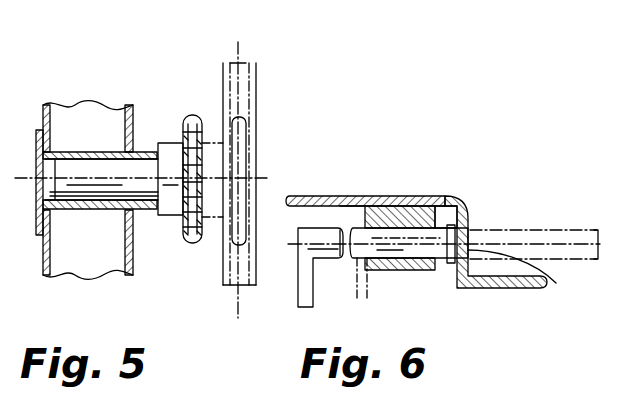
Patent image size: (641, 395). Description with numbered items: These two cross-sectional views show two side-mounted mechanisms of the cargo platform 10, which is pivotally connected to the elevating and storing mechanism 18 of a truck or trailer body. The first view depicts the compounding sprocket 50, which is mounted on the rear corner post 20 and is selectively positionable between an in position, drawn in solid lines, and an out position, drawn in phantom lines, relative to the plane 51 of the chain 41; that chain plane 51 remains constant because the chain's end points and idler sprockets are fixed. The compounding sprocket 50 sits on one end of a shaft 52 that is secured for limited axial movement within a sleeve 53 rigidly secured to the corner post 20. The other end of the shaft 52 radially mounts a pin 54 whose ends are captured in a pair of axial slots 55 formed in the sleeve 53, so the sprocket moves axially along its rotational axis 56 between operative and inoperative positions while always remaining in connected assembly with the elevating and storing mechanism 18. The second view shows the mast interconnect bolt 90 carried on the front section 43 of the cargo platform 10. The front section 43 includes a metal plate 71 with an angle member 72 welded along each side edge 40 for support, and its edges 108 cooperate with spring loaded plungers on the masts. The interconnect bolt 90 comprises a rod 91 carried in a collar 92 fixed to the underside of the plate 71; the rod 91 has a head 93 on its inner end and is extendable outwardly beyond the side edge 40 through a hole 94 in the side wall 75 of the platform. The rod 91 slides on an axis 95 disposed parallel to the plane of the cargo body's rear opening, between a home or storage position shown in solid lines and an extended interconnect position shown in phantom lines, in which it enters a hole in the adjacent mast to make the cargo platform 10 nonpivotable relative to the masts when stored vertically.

In FIG. 6, the cargo platform 10 is at (423, 100).
In FIG. 5, the elevating and storing mechanism 18 is at (0, 61).
In FIG. 5, the rear corner post 20 is at (45, 275).
In FIG. 6, the side edge 40 is at (468, 213).
In FIG. 5, the chain 41 is at (256, 78).
In FIG. 6, the front section 43 is at (328, 198).
In FIG. 5, the compounding sprocket 50 is at (233, 117).
In FIG. 5, the plane of chain 51 is at (241, 58).
In FIG. 5, the shaft 52 is at (127, 170).
In FIG. 5, the sleeve 53 is at (148, 212).
In FIG. 5, the pin 54 is at (53, 173).
In FIG. 5, the axial slots 55 is at (77, 200).
In FIG. 5, the rotational axis 56 is at (263, 175).
In FIG. 6, the metal plate 71 is at (358, 195).
In FIG. 6, the angle member 72 is at (455, 290).
In FIG. 6, the side wall 75 is at (473, 222).
In FIG. 6, the mast interconnect bolt 90 is at (428, 284).
In FIG. 6, the rod 91 is at (477, 230).
In FIG. 6, the collar 92 is at (403, 212).
In FIG. 6, the head 93 is at (346, 311).
In FIG. 6, the hole 94 is at (523, 276).
In FIG. 6, the axis 95 is at (571, 241).
In FIG. 6, the edges 108 is at (520, 289).